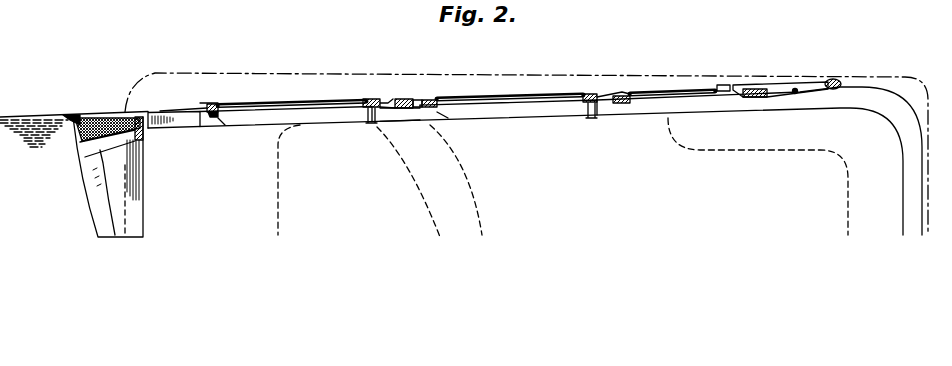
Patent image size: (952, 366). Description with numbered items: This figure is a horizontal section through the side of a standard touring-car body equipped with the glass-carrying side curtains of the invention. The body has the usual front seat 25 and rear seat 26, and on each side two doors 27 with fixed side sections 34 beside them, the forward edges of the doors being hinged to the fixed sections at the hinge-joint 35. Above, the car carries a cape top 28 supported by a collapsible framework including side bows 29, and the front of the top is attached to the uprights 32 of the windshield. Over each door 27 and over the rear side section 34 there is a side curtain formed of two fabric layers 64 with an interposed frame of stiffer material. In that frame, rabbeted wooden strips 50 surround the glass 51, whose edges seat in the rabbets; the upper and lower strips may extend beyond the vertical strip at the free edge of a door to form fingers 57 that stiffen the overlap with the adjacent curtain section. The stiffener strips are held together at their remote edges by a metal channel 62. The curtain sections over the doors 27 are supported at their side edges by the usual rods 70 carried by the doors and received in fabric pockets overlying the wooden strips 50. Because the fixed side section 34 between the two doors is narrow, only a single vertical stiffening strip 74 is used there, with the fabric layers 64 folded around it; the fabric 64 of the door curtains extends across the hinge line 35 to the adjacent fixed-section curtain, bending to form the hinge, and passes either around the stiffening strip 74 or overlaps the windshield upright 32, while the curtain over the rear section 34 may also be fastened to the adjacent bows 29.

The front seat 25 is at (258, 225).
The rear seat 26 is at (682, 183).
The door 27 is at (272, 127).
The cape top 28 is at (148, 78).
The side bow 29 is at (800, 83).
The windshield upright 32 is at (148, 130).
The fixed side section 34 is at (182, 127).
The hinge-joint 35 is at (220, 125).
The rabbeted wooden strip 50 is at (209, 106).
The glass 51 is at (300, 104).
The finger 57 is at (387, 102).
The metal channel 62 is at (405, 100).
The fabric layers 64 is at (177, 108).
The rod 70 is at (222, 118).
The stiffening strip 74 is at (423, 100).